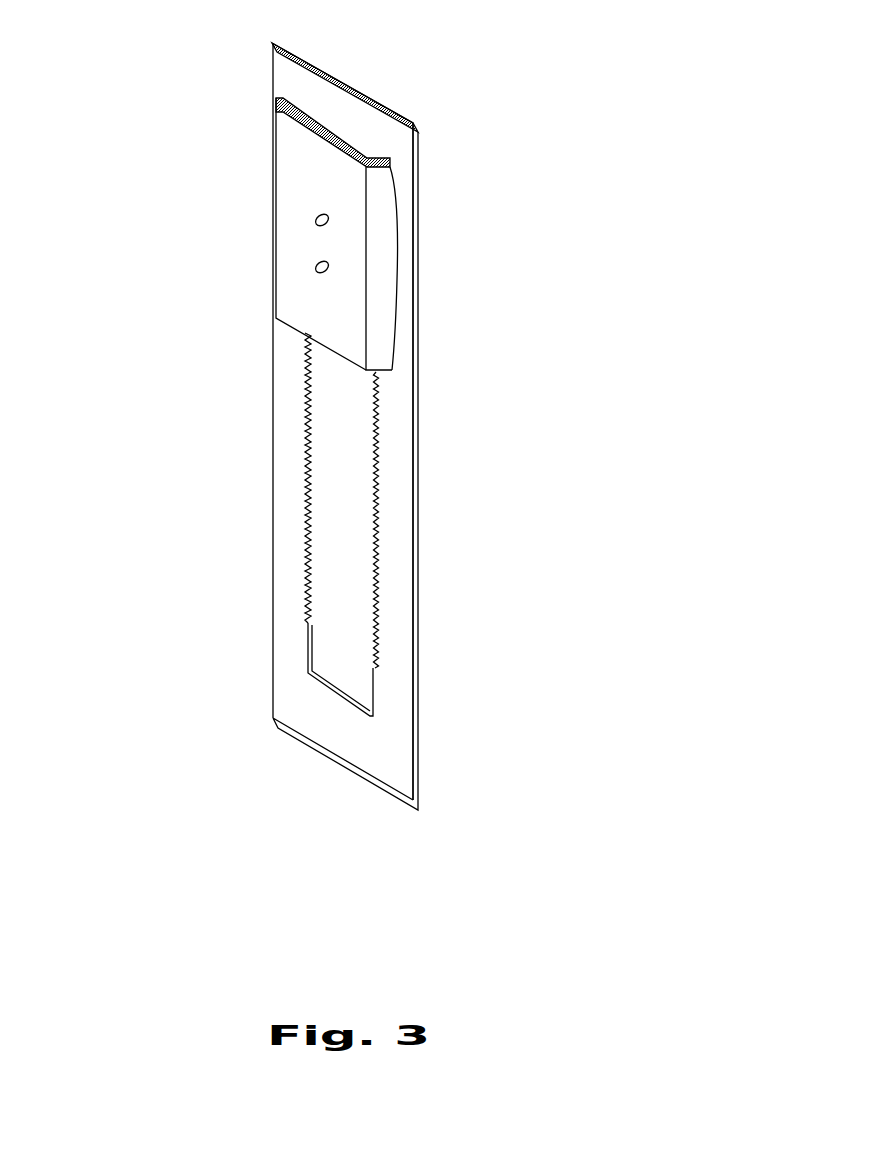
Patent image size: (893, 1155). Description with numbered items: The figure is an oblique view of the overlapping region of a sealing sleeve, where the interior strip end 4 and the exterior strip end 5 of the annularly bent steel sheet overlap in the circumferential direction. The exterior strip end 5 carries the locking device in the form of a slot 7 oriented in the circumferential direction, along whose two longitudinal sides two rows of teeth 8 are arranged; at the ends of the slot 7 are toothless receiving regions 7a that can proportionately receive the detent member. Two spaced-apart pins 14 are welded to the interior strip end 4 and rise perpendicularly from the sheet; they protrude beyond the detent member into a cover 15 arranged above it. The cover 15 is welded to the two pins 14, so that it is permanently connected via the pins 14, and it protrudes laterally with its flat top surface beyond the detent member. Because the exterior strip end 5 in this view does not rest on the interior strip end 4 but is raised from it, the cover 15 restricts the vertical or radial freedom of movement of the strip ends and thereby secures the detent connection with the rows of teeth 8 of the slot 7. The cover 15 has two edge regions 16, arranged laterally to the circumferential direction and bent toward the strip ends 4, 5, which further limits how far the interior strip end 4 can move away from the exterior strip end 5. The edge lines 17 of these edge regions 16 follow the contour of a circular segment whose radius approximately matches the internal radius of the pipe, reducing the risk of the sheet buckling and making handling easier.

The interior strip end 4 is at (330, 753).
The exterior strip end 5 is at (333, 98).
The slot 7 is at (352, 466).
The receiving region 7a is at (362, 680).
The rows of teeth 8 is at (310, 442).
The pin 14 is at (318, 218).
The cover 15 is at (297, 297).
The edge region 16 is at (380, 260).
The edge line 17 is at (397, 200).